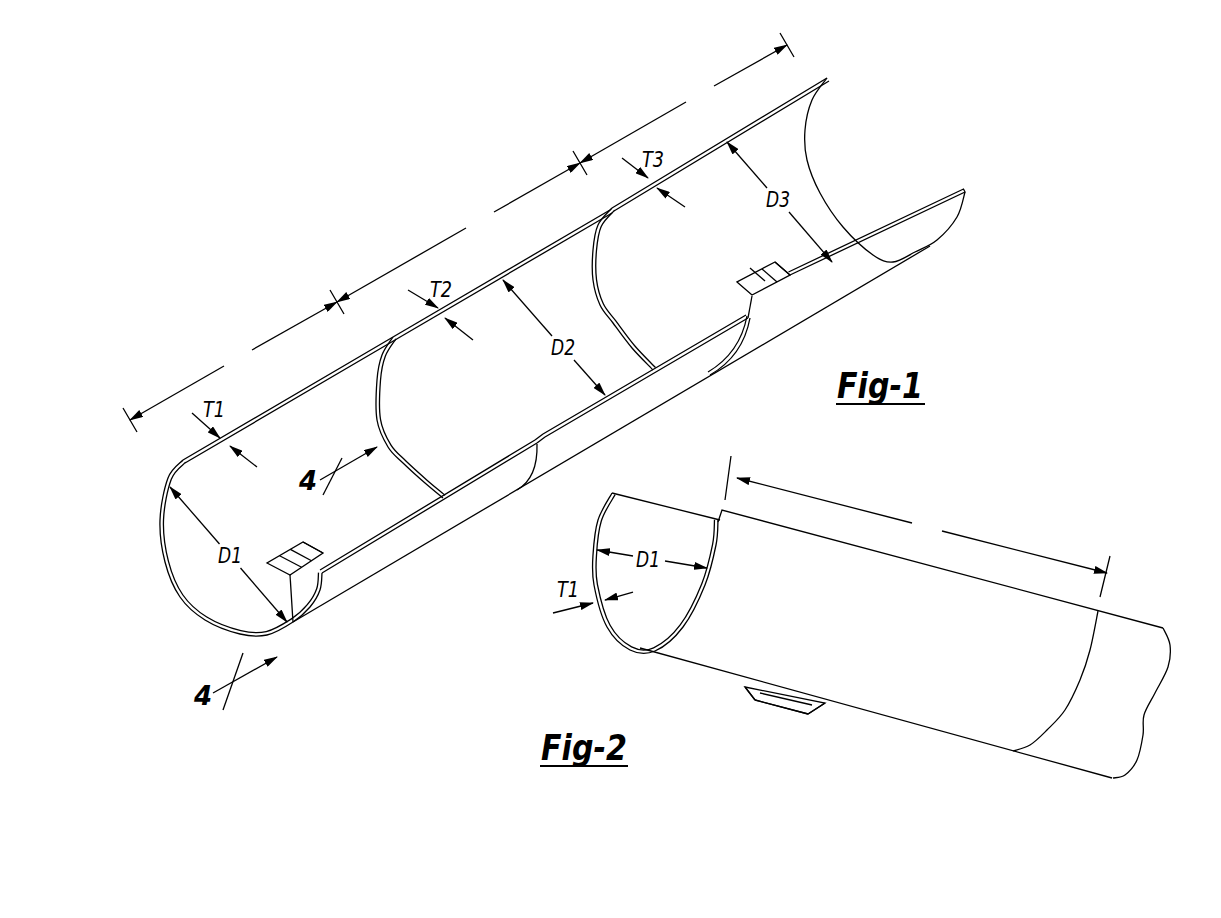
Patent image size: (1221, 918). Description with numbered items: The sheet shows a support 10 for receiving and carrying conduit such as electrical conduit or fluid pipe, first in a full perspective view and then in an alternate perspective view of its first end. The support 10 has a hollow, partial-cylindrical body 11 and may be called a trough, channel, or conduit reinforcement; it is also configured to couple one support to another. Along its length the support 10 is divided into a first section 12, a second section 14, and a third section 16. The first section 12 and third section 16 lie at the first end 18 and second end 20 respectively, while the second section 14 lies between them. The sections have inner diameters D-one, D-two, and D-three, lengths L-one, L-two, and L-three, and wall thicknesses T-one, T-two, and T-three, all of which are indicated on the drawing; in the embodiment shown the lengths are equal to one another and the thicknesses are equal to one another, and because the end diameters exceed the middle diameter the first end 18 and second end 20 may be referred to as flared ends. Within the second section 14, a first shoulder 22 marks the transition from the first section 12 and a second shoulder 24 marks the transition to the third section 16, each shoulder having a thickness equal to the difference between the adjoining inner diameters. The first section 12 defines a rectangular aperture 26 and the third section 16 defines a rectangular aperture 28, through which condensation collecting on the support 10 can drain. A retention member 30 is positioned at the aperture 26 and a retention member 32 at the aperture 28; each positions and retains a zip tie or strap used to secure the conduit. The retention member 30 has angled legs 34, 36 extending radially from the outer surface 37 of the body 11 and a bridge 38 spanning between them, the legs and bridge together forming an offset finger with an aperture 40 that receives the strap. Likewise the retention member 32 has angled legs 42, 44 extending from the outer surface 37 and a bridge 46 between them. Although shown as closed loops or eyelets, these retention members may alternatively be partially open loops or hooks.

In FIG. 1, the support 10 is at (353, 258).
In FIG. 2, the support 10 is at (1000, 493).
In FIG. 1, the body 11 is at (412, 388).
In FIG. 1, the first section 12 is at (283, 417).
In FIG. 2, the first section 12 is at (933, 687).
In FIG. 1, the second section 14 is at (530, 273).
In FIG. 1, the third section 16 is at (680, 180).
In FIG. 1, the first end 18 is at (200, 612).
In FIG. 2, the first end 18 is at (610, 648).
In FIG. 1, the second end 20 is at (807, 137).
In FIG. 1, the first shoulder 22 is at (377, 390).
In FIG. 1, the second shoulder 24 is at (593, 257).
In FIG. 1, the rectangular aperture 26 is at (280, 557).
In FIG. 1, the rectangular aperture 28 is at (737, 287).
In FIG. 1, the retention member 30 is at (308, 543).
In FIG. 2, the retention member 30 is at (753, 710).
In FIG. 1, the retention member 32 is at (777, 257).
In FIG. 1, the angled leg 34 is at (293, 625).
In FIG. 2, the angled leg 34 is at (740, 693).
In FIG. 1, the angled leg 36 is at (317, 550).
In FIG. 2, the angled leg 36 is at (827, 717).
In FIG. 2, the outer surface 37 is at (895, 712).
In FIG. 1, the bridge 38 is at (303, 550).
In FIG. 2, the bridge 38 is at (778, 710).
In FIG. 2, the aperture 40 is at (787, 700).
In FIG. 1, the angled leg 42 is at (757, 320).
In FIG. 1, the angled leg 44 is at (797, 267).
In FIG. 1, the bridge 46 is at (767, 272).